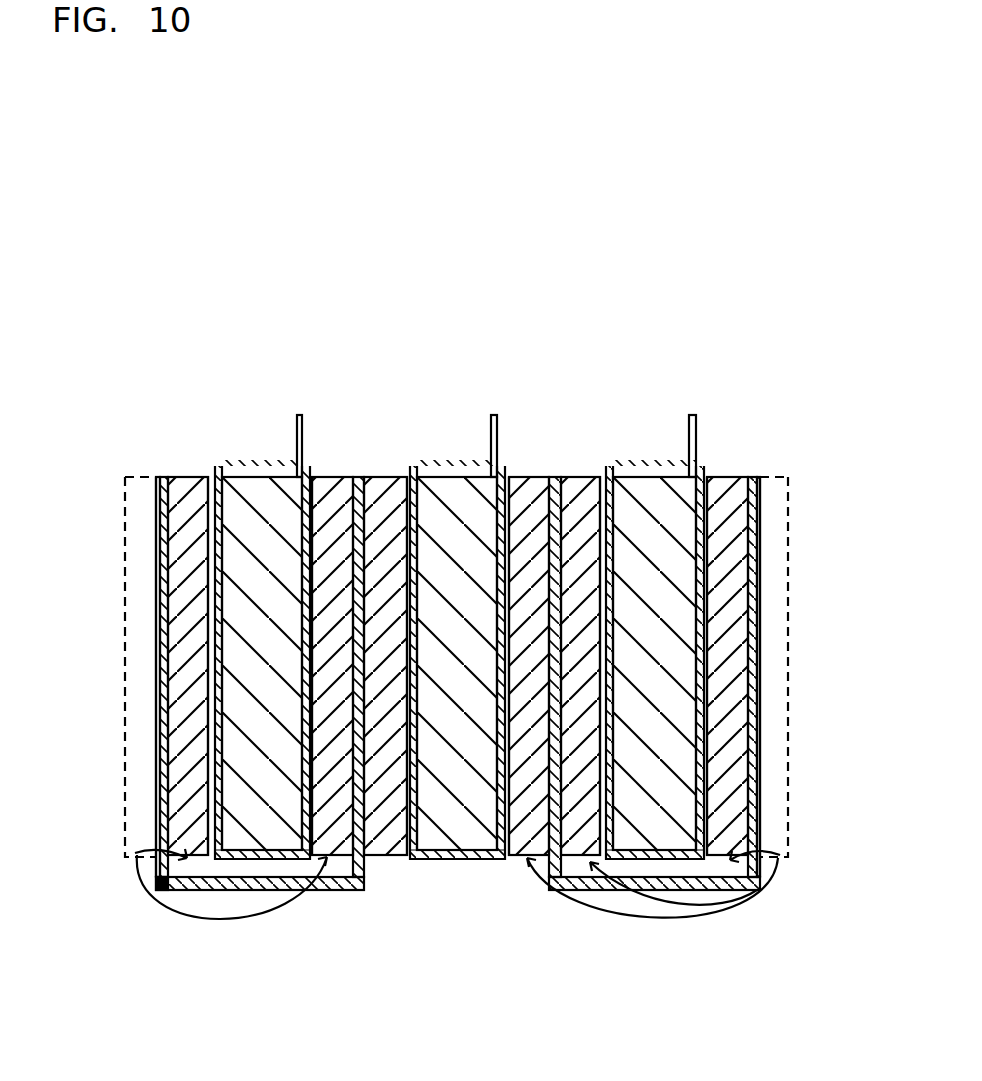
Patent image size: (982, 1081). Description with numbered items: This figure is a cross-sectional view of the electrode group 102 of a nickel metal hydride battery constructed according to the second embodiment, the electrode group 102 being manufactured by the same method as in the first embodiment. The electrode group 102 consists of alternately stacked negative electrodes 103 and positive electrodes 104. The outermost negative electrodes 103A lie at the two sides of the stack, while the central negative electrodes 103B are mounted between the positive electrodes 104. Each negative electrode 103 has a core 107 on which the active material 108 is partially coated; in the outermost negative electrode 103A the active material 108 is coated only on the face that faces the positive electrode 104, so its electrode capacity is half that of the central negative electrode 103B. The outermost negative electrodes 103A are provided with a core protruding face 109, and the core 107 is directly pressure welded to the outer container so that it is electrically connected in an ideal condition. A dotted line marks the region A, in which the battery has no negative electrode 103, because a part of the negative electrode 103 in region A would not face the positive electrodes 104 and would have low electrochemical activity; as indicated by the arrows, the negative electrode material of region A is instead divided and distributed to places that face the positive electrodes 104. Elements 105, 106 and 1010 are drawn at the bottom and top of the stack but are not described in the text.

The electrode group 102 is at (809, 466).
The negative electrode 103 is at (438, 619).
The outermost negative electrode 103A is at (151, 465).
The central negative electrode 103B is at (360, 459).
The positive electrode 104 is at (265, 459).
The separator bottom portion 105 is at (268, 865).
The collector connecting portion 106 is at (237, 901).
The core 107 is at (158, 712).
The active material 108 is at (178, 782).
The core protruding face 109 is at (149, 657).
The negative electrode lead 1010 is at (300, 415).
The region A is at (137, 822).